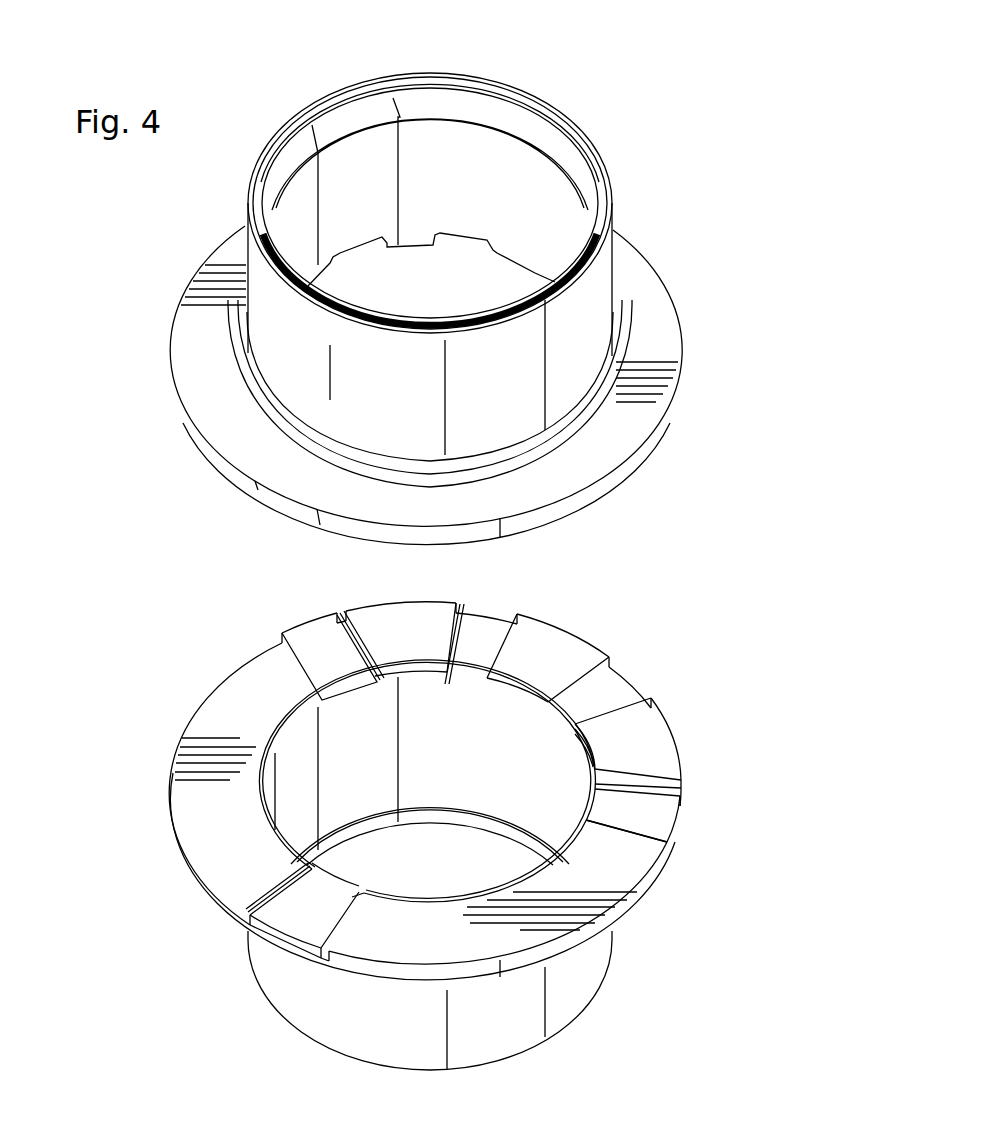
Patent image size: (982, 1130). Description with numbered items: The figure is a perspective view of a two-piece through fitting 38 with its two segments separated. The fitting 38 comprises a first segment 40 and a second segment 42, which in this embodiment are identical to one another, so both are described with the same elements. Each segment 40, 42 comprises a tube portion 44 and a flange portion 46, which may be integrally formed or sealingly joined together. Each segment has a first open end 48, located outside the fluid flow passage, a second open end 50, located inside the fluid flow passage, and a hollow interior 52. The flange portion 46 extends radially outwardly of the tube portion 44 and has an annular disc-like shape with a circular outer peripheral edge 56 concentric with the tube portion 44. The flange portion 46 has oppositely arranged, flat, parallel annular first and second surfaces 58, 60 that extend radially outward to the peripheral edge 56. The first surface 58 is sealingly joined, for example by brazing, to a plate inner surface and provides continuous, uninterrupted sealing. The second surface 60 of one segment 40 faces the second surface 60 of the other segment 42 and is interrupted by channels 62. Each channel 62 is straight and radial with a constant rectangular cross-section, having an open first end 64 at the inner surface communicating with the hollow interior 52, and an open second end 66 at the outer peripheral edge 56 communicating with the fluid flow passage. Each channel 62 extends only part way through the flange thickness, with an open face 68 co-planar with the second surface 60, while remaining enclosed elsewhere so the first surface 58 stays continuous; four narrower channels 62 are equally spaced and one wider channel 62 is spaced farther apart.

The two-piece through fitting 38 is at (757, 360).
The first segment 40 is at (606, 192).
The second segment 42 is at (588, 972).
The tube portion 44 is at (258, 272).
The flange portion 46 is at (632, 438).
The first open end 48 is at (428, 102).
The second open end 50 is at (346, 290).
The hollow interior 52 is at (477, 192).
The outer peripheral edge 56 is at (207, 440).
The first surface 58 is at (200, 368).
The second surface 60 is at (643, 737).
The channel 62 is at (555, 283).
The open first end 64 is at (333, 897).
The open second end 66 is at (277, 937).
The open face 68 is at (275, 887).